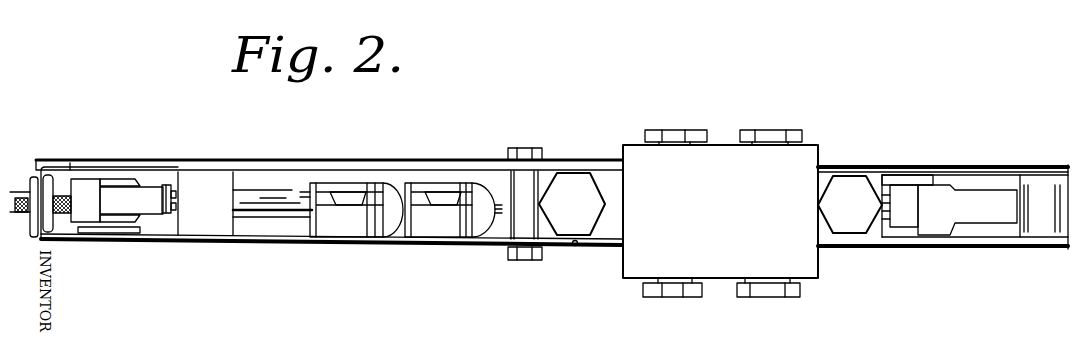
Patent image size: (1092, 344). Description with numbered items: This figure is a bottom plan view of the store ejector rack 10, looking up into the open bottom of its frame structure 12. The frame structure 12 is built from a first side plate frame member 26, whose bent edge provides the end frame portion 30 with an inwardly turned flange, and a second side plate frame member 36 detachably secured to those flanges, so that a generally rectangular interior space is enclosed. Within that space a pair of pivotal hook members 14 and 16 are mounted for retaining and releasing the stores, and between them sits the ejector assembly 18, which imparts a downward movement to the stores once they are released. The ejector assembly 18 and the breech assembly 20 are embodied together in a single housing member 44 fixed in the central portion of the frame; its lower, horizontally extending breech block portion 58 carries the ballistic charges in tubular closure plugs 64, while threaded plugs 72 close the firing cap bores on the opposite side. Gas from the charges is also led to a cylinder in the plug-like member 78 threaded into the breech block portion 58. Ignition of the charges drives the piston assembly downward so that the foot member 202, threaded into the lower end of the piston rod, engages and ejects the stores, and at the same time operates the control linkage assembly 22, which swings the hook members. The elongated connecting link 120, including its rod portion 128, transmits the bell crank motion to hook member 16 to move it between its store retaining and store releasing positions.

The store ejector rack 10 is at (1050, 134).
The frame structure 12 is at (392, 142).
The pivotal hook member 14 is at (955, 180).
The pivotal hook member 16 is at (157, 190).
The ejector assembly 18 is at (574, 251).
The breech assembly 20 is at (822, 138).
The control linkage assembly 22 is at (957, 143).
The first side plate frame member 26 is at (424, 243).
The end frame portion 30 is at (32, 176).
The second side plate frame member 36 is at (470, 140).
The housing member 44 is at (712, 166).
The breech block portion 58 is at (772, 196).
The tubular closure plug 64 is at (760, 298).
The threaded plug 72 is at (680, 130).
The plug-like member 78 is at (858, 185).
The connecting link 120 is at (290, 220).
The rod portion 128 is at (285, 192).
The foot member 202 is at (586, 201).